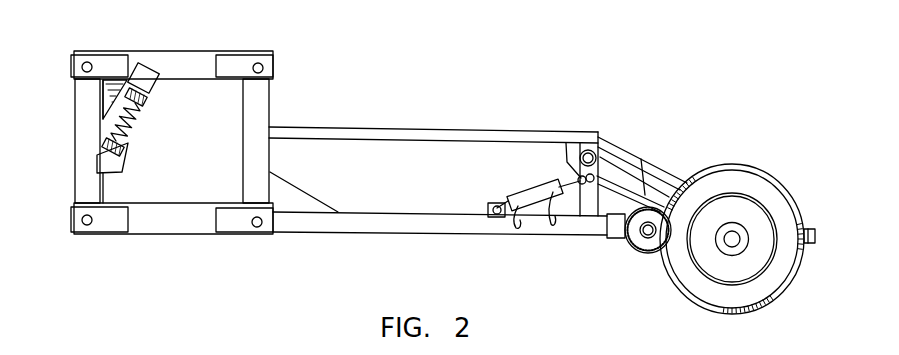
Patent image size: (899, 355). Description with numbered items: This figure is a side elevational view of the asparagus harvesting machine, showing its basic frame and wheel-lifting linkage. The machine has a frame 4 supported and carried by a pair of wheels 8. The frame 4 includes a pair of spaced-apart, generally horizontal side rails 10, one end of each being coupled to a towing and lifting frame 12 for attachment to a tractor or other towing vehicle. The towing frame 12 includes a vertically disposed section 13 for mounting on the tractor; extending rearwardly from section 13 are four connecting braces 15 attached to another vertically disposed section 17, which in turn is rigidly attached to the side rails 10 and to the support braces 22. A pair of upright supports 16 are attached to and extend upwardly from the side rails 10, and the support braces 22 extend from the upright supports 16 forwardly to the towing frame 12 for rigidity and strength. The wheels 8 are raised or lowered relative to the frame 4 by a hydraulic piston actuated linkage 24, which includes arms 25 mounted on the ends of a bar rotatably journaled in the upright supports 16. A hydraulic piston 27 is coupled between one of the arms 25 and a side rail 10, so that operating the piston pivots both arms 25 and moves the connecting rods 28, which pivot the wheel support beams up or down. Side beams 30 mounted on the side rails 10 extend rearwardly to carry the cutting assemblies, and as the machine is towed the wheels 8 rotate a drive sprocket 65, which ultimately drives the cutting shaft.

The frame 4 is at (486, 117).
The wheels 8 is at (775, 177).
The side rails 10 is at (372, 223).
The towing and lifting frame 12 is at (189, 153).
The vertically disposed section 13 is at (87, 133).
The connecting braces 15 is at (172, 62).
The upright supports 16 is at (612, 150).
The vertically disposed section 17 is at (259, 104).
The support braces 22 is at (379, 135).
The hydraulic piston actuated linkage 24 is at (572, 166).
The arms 25 is at (568, 140).
The hydraulic piston 27 is at (533, 192).
The connecting rods 28 is at (650, 186).
The side beams 30 is at (814, 240).
The drive sprocket 65 is at (642, 247).